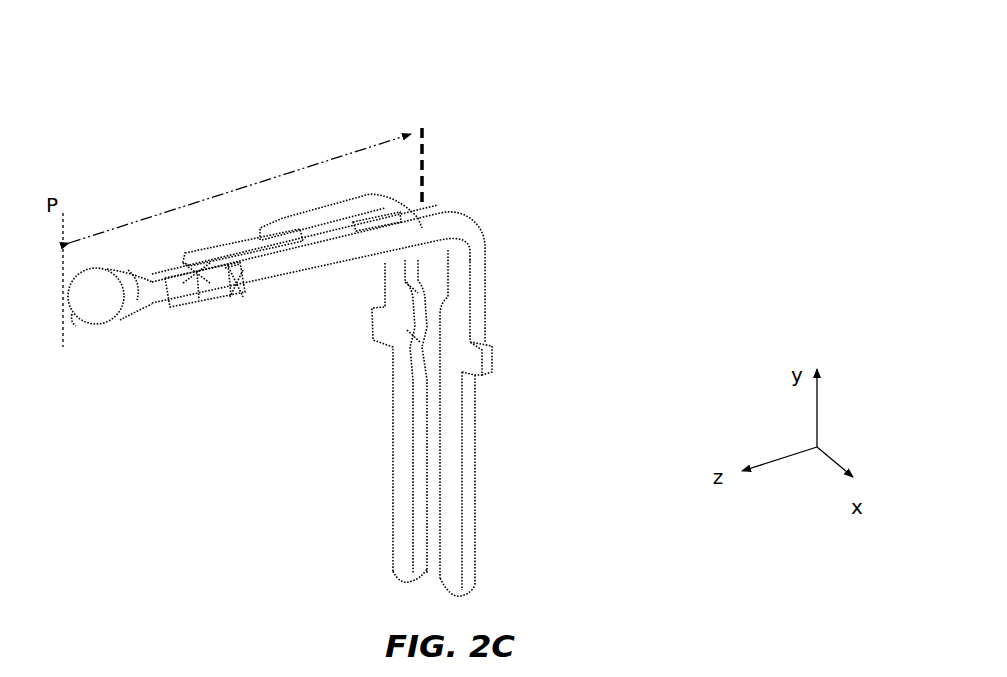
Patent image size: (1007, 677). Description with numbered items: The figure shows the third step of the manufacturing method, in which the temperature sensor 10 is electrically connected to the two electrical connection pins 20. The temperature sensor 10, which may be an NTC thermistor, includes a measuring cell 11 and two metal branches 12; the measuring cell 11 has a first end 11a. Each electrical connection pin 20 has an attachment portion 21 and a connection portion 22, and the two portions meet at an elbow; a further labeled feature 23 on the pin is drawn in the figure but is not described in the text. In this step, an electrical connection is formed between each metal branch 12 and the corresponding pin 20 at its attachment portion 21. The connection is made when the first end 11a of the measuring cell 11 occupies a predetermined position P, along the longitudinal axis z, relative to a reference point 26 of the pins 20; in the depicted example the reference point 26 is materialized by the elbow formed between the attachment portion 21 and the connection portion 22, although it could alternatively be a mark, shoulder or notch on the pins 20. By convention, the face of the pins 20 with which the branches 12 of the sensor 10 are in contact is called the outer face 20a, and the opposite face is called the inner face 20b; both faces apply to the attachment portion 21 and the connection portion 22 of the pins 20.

The temperature sensor 10 is at (195, 67).
The measuring cell 11 is at (105, 292).
The first end 11a is at (73, 324).
The metal branches 12 is at (246, 270).
The electrical connection pins 20 is at (584, 317).
The outer face 20a is at (558, 182).
The inner face 20b is at (154, 479).
The attachment portion 21 is at (133, 203).
The connection portion 22 is at (512, 593).
The bend portion 23 is at (240, 252).
The reference point 26 is at (425, 146).